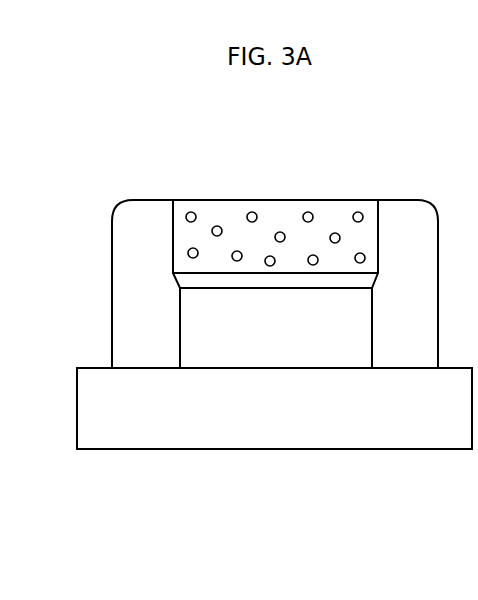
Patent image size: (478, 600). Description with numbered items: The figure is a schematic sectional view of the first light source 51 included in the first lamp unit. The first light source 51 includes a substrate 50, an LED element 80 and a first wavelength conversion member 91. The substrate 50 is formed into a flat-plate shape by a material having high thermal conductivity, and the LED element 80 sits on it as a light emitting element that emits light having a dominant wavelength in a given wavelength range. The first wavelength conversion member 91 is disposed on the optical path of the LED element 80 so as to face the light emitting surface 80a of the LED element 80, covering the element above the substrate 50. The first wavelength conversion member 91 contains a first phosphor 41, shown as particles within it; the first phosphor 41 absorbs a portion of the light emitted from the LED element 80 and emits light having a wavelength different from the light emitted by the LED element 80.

The first phosphor 41 is at (244, 210).
The first wavelength conversion member 91 is at (179, 235).
The light emitting surface 80a is at (294, 283).
The LED element 80 is at (190, 340).
The substrate 50 is at (277, 437).
The first light source 51 is at (290, 552).